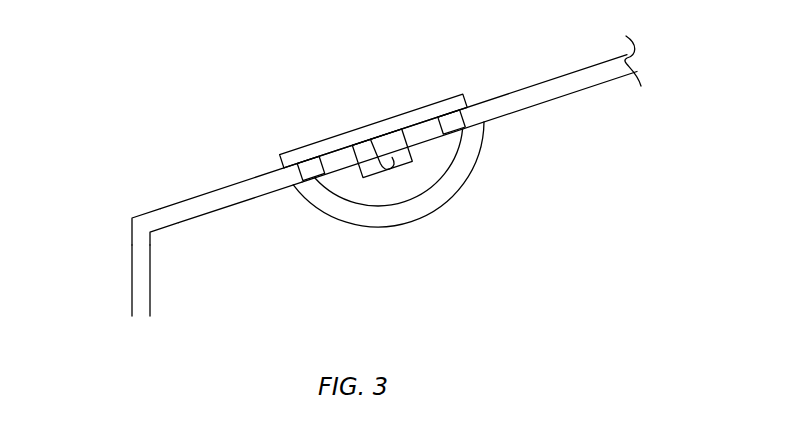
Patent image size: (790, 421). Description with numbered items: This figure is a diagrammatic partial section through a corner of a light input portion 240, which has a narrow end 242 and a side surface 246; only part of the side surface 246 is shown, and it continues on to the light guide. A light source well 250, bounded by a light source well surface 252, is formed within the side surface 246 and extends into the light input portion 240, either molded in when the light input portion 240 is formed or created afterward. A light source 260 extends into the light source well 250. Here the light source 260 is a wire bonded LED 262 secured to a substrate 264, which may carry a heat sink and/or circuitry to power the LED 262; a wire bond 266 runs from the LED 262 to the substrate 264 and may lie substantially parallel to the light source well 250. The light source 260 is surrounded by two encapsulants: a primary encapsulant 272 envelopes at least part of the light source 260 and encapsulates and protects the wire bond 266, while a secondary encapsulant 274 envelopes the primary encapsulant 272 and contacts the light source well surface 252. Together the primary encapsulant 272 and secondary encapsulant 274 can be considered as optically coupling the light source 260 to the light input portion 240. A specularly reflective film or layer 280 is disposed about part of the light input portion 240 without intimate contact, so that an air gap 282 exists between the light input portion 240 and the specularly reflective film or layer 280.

The light input portion 240 is at (168, 118).
The narrow end 242 is at (151, 283).
The side surface 246 is at (555, 99).
The light source well 250 is at (400, 247).
The light source well surface 252 is at (372, 229).
The light source 260 is at (345, 103).
The LED 262 is at (400, 152).
The substrate 264 is at (296, 150).
The wire bond 266 is at (374, 158).
The primary encapsulant 272 is at (408, 188).
The secondary encapsulant 274 is at (440, 190).
The specularly reflective film or layer 280 is at (152, 210).
The air gap 282 is at (215, 200).